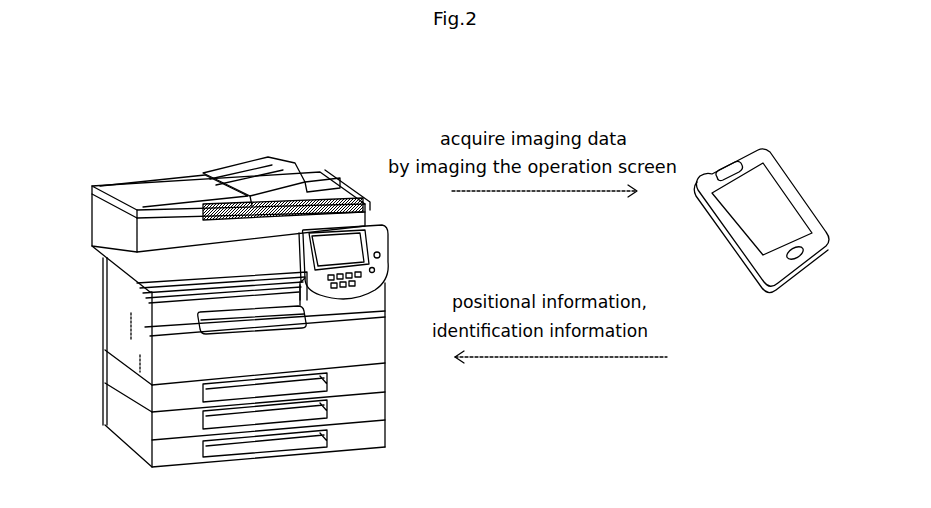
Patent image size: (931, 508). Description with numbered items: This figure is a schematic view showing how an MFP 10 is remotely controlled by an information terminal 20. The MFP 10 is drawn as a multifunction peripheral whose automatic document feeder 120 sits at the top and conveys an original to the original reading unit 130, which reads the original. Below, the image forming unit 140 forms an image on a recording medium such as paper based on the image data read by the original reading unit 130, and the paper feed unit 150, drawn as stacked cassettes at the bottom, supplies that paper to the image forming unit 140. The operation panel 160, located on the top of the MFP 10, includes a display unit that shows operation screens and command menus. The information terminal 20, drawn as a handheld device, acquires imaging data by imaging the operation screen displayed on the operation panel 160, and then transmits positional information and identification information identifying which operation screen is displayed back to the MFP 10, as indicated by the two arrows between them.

The MFP 10 is at (275, 142).
The information terminal 20 is at (792, 183).
The automatic document feeder 120 is at (133, 184).
The original reading unit 130 is at (103, 244).
The image forming unit 140 is at (92, 312).
The paper feed unit 150 is at (92, 352).
The operation panel 160 is at (348, 243).